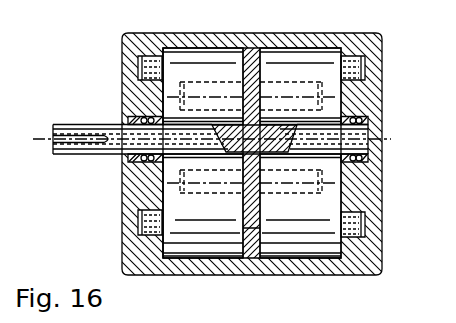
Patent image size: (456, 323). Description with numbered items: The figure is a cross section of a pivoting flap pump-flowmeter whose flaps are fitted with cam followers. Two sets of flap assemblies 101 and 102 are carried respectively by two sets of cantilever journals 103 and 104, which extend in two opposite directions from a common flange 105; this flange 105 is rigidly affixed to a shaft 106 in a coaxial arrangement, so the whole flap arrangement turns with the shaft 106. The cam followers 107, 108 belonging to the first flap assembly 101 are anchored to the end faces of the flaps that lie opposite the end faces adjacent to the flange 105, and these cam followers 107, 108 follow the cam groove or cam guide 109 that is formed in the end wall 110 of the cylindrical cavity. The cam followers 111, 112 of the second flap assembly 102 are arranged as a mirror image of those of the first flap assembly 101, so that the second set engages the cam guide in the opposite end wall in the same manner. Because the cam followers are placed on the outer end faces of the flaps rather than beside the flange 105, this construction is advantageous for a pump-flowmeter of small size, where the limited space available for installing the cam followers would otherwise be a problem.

The flap assembly 101 is at (163, 34).
The flap assembly 102 is at (306, 77).
The cantilever journals 103 is at (195, 77).
The cantilever journals 104 is at (286, 95).
The common flange 105 is at (250, 228).
The shaft 106 is at (268, 147).
The cam follower 107 is at (138, 70).
The cam follower 108 is at (150, 238).
The cam groove or cam guide 109 is at (150, 200).
The end wall 110 is at (143, 97).
The cam follower 111 is at (366, 65).
The cam follower 112 is at (366, 222).